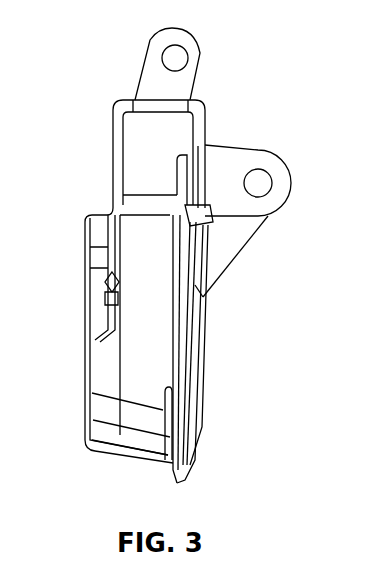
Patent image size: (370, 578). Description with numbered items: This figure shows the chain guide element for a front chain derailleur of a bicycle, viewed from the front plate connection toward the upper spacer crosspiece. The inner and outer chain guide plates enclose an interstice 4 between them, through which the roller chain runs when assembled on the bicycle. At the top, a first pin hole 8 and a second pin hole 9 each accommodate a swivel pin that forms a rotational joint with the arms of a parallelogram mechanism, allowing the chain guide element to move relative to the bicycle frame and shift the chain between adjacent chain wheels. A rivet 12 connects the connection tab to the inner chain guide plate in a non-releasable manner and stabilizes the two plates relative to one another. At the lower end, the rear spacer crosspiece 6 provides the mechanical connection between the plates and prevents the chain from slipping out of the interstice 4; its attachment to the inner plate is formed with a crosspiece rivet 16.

The interstice 4 is at (203, 136).
The rear spacer crosspiece 6 is at (122, 435).
The first pin hole 8 is at (183, 53).
The second pin hole 9 is at (265, 179).
The rivet 12 is at (180, 182).
The crosspiece rivet 16 is at (163, 410).